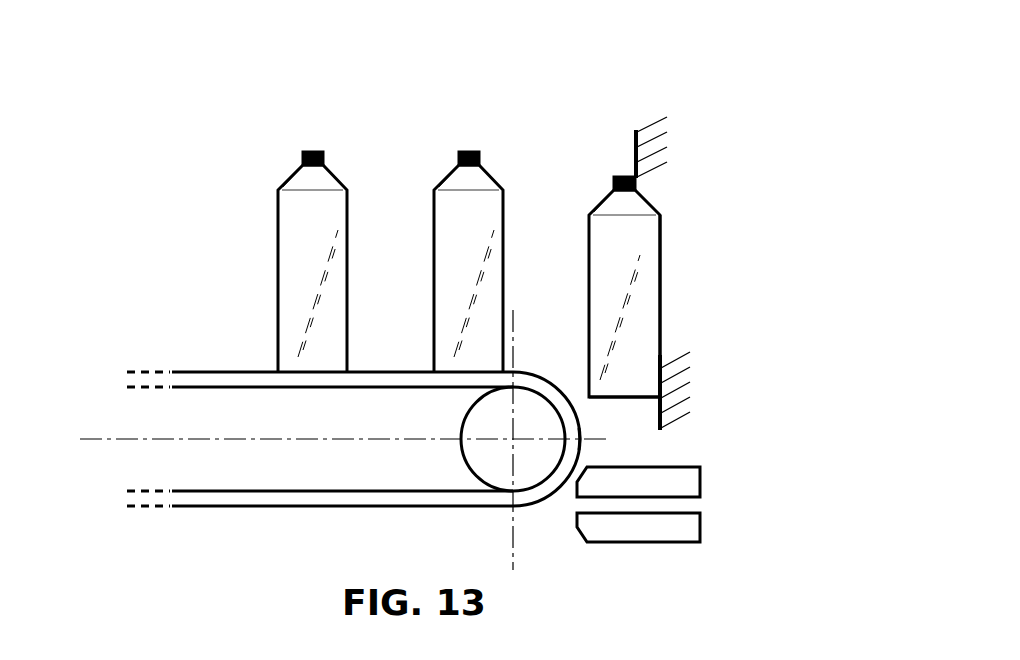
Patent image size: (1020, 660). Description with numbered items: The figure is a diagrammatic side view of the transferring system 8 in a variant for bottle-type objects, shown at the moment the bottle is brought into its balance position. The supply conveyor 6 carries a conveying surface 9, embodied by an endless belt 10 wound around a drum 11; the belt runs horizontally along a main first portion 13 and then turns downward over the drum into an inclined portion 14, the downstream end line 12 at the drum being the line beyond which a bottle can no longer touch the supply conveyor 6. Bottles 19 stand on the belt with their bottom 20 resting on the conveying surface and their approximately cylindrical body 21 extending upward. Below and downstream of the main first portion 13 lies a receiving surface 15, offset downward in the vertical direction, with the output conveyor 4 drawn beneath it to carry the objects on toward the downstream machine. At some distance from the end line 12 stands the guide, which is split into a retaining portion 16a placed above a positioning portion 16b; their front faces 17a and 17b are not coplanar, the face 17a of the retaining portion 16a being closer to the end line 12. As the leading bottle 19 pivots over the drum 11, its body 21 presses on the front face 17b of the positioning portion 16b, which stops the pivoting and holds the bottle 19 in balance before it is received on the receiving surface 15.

The output conveyor 4 is at (704, 524).
The supply conveyor 6 is at (242, 510).
The transferring system 8 is at (531, 110).
The conveying surface 9 is at (197, 368).
The endless belt 10 is at (383, 490).
The drum 11 is at (487, 484).
The downstream end line 12 is at (582, 436).
The main first portion 13 is at (397, 370).
The inclined portion 14 is at (534, 375).
The receiving surface 15 is at (695, 465).
The retaining portion 16a is at (642, 135).
The positioning portion 16b is at (667, 369).
The front face of the retaining portion 17a is at (634, 137).
The front face of the positioning portion 17b is at (658, 419).
The bottle 19 is at (301, 238).
The bottom 20 is at (642, 396).
The body 21 is at (661, 235).